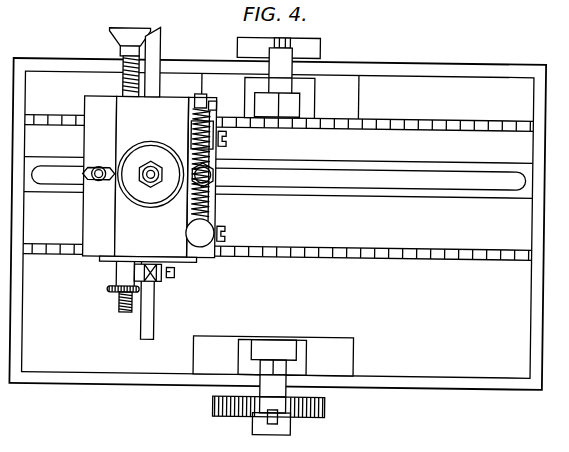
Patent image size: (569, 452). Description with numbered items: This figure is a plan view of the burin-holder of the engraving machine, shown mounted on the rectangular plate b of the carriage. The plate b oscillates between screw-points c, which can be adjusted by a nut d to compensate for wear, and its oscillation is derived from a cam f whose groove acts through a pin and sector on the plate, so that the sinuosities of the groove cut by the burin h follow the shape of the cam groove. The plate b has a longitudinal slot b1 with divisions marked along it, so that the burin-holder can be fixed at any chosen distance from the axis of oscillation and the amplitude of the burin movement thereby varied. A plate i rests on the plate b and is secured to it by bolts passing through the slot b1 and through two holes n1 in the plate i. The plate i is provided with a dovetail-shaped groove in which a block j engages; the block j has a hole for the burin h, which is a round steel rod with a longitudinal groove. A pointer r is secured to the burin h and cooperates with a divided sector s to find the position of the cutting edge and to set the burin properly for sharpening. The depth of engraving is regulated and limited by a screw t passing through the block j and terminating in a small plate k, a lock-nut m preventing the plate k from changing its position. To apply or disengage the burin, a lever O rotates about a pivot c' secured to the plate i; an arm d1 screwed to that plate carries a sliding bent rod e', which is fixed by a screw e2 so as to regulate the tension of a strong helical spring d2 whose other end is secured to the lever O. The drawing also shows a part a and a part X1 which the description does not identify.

The bearing support a is at (275, 226).
The rectangular plate b is at (277, 224).
The longitudinal slot b1 is at (472, 170).
The screw-points c is at (309, 32).
The pivot c' is at (232, 237).
The nut d is at (280, 63).
The arm d1 is at (214, 156).
The helical spring d2 is at (212, 206).
The bent rod e' is at (215, 91).
The screw e2 is at (225, 140).
The cam f is at (317, 51).
The burin h is at (154, 51).
The plate i is at (100, 176).
The block j is at (152, 176).
The small plate k is at (110, 32).
The lock-nut m is at (108, 291).
The holes n1 is at (98, 183).
The lever O is at (207, 248).
The pointer r is at (158, 284).
The divided sector s is at (100, 263).
The screw t is at (121, 309).
The knurled wheel X1 is at (327, 408).